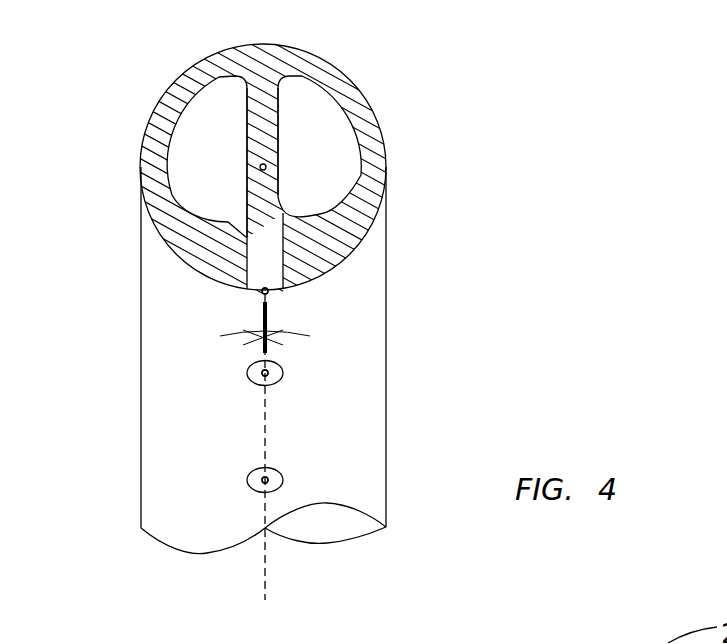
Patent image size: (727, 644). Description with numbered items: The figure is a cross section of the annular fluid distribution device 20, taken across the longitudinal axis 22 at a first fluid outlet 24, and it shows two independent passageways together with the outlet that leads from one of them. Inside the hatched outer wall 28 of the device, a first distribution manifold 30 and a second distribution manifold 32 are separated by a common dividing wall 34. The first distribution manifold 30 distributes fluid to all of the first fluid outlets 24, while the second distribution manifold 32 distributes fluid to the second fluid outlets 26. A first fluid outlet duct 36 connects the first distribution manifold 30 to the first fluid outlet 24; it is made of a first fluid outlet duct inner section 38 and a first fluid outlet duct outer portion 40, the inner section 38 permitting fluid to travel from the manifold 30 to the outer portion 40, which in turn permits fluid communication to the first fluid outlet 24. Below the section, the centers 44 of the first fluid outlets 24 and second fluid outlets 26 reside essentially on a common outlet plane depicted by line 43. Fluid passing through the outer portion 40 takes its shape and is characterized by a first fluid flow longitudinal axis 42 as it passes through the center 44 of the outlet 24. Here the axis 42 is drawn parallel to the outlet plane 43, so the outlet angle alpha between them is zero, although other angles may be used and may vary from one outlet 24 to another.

The annular fluid distribution device 20 is at (203, 53).
The longitudinal axis 22 is at (266, 167).
The first fluid outlet 24 is at (262, 292).
The second fluid outlet 26 is at (246, 376).
The outer wall 28 is at (386, 237).
The first distribution manifold 30 is at (220, 118).
The second distribution manifold 32 is at (303, 115).
The common dividing wall 34 is at (247, 133).
The first fluid outlet duct 36 is at (237, 247).
The first fluid outlet duct inner section 38 is at (252, 229).
The first fluid outlet duct outer portion 40 is at (263, 267).
The first fluid flow longitudinal axis 42 is at (266, 312).
The common outlet plane 43 is at (265, 563).
The center 44 is at (265, 291).